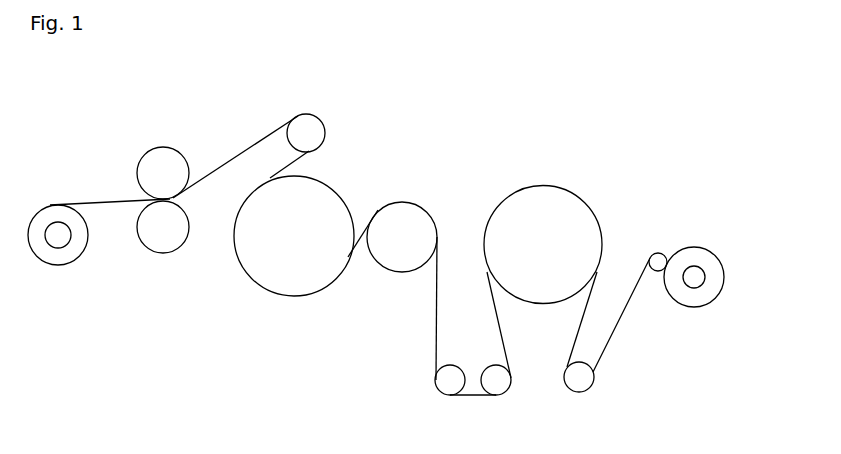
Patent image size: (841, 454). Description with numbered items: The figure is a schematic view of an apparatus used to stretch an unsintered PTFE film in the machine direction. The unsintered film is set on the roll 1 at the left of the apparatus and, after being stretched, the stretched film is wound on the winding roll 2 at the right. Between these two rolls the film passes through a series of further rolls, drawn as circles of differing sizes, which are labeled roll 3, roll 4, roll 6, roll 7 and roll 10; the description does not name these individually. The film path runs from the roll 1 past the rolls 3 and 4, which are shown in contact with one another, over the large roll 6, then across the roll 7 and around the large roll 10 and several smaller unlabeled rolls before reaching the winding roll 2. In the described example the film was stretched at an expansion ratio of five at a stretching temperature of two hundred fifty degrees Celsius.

The roll 1 is at (60, 260).
The winding roll 2 is at (713, 279).
The nip roll 3 is at (162, 243).
The nip roll 4 is at (145, 167).
The drum 6 is at (293, 273).
The roll 7 is at (402, 217).
The roll 10 is at (547, 198).